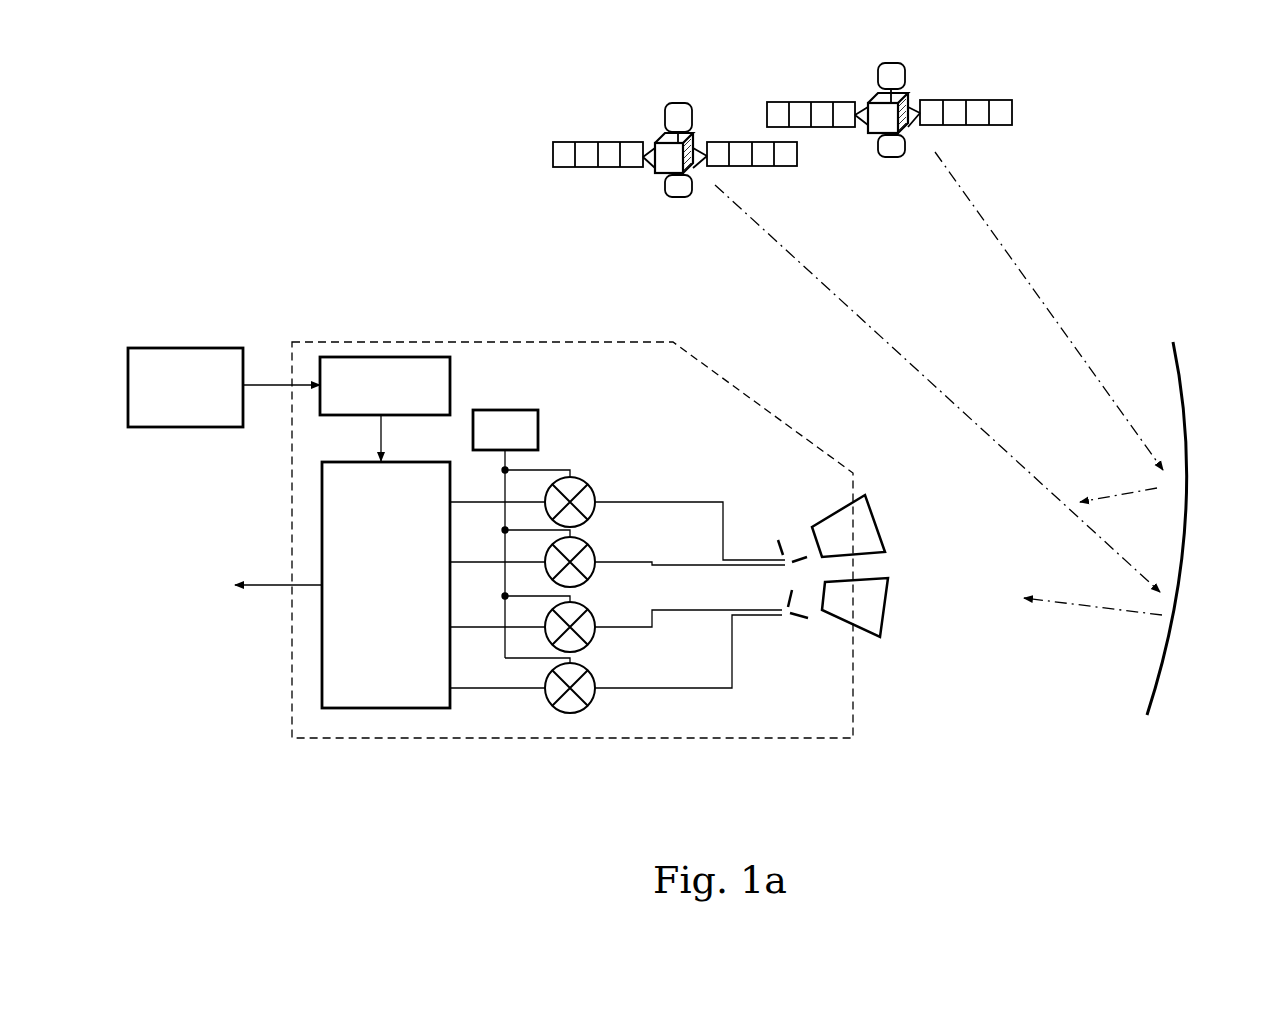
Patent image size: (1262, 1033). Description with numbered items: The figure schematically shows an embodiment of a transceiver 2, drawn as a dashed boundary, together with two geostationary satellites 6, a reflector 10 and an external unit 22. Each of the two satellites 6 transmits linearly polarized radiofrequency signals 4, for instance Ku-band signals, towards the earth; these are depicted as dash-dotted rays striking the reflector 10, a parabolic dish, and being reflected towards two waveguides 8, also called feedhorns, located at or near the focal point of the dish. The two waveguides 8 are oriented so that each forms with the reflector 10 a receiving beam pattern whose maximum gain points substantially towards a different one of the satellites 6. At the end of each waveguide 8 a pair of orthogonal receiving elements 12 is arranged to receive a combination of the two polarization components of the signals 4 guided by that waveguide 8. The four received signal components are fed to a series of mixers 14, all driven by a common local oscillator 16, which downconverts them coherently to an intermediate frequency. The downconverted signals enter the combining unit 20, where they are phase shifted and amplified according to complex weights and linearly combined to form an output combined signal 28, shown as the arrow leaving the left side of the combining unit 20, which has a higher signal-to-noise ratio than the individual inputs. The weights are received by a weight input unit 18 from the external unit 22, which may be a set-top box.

The transceiver 2 is at (367, 341).
The linearly polarized radiofrequency signals 4 is at (1069, 270).
The geostationary satellites 6 is at (700, 123).
The waveguides 8 is at (835, 510).
The reflector 10 is at (1163, 685).
The receiving elements 12 is at (766, 516).
The mixers 14 is at (592, 470).
The local oscillator 16 is at (505, 410).
The weight input unit 18 is at (422, 357).
The combining unit 20 is at (423, 709).
The external unit 22 is at (188, 348).
The output combined signal 28 is at (273, 587).